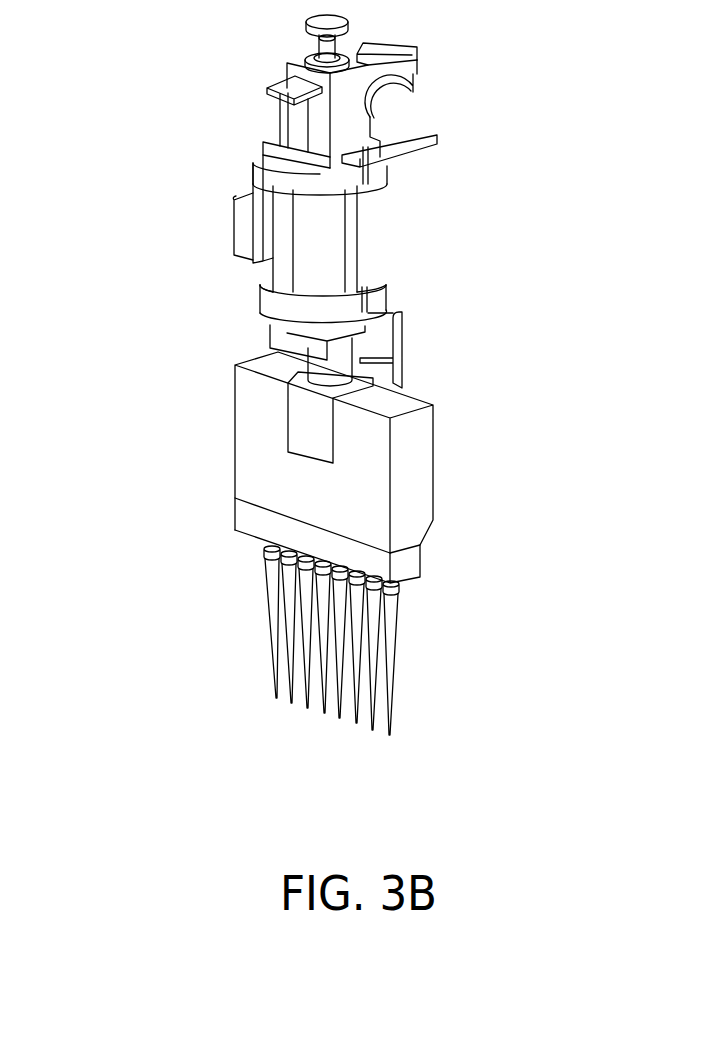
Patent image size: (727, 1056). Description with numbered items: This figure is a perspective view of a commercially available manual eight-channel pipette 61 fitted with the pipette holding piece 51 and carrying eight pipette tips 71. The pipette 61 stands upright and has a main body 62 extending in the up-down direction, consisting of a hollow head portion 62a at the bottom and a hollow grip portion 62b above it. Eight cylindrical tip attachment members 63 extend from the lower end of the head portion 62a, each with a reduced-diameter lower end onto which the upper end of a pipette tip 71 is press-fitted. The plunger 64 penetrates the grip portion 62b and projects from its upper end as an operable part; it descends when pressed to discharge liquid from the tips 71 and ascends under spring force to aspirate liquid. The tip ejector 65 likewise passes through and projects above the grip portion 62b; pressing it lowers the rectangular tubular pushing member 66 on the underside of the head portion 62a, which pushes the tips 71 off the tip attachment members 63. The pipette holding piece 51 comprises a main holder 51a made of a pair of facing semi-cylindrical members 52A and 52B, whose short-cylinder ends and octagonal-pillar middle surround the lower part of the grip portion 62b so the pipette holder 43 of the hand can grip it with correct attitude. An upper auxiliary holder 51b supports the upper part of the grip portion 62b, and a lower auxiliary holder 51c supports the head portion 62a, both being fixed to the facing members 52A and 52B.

The plunger 64 is at (305, 26).
The upper auxiliary holder 51b is at (350, 53).
The tip ejector 65 is at (290, 118).
The grip portion 62b is at (275, 148).
The semi-cylindrical member 52A is at (290, 178).
The main holder 51a is at (312, 243).
The main body 62 is at (67, 140).
The pipette holding piece 51 is at (242, 275).
The head portion 62a is at (255, 402).
The pipette 61 is at (199, 459).
The semi-cylindrical member 52B is at (400, 151).
The pipette holder 43 is at (472, 345).
The lower auxiliary holder 51c is at (395, 363).
The pushing member 66 is at (410, 563).
The tip attachment members 63 is at (416, 599).
The pipette tips 71 is at (397, 657).